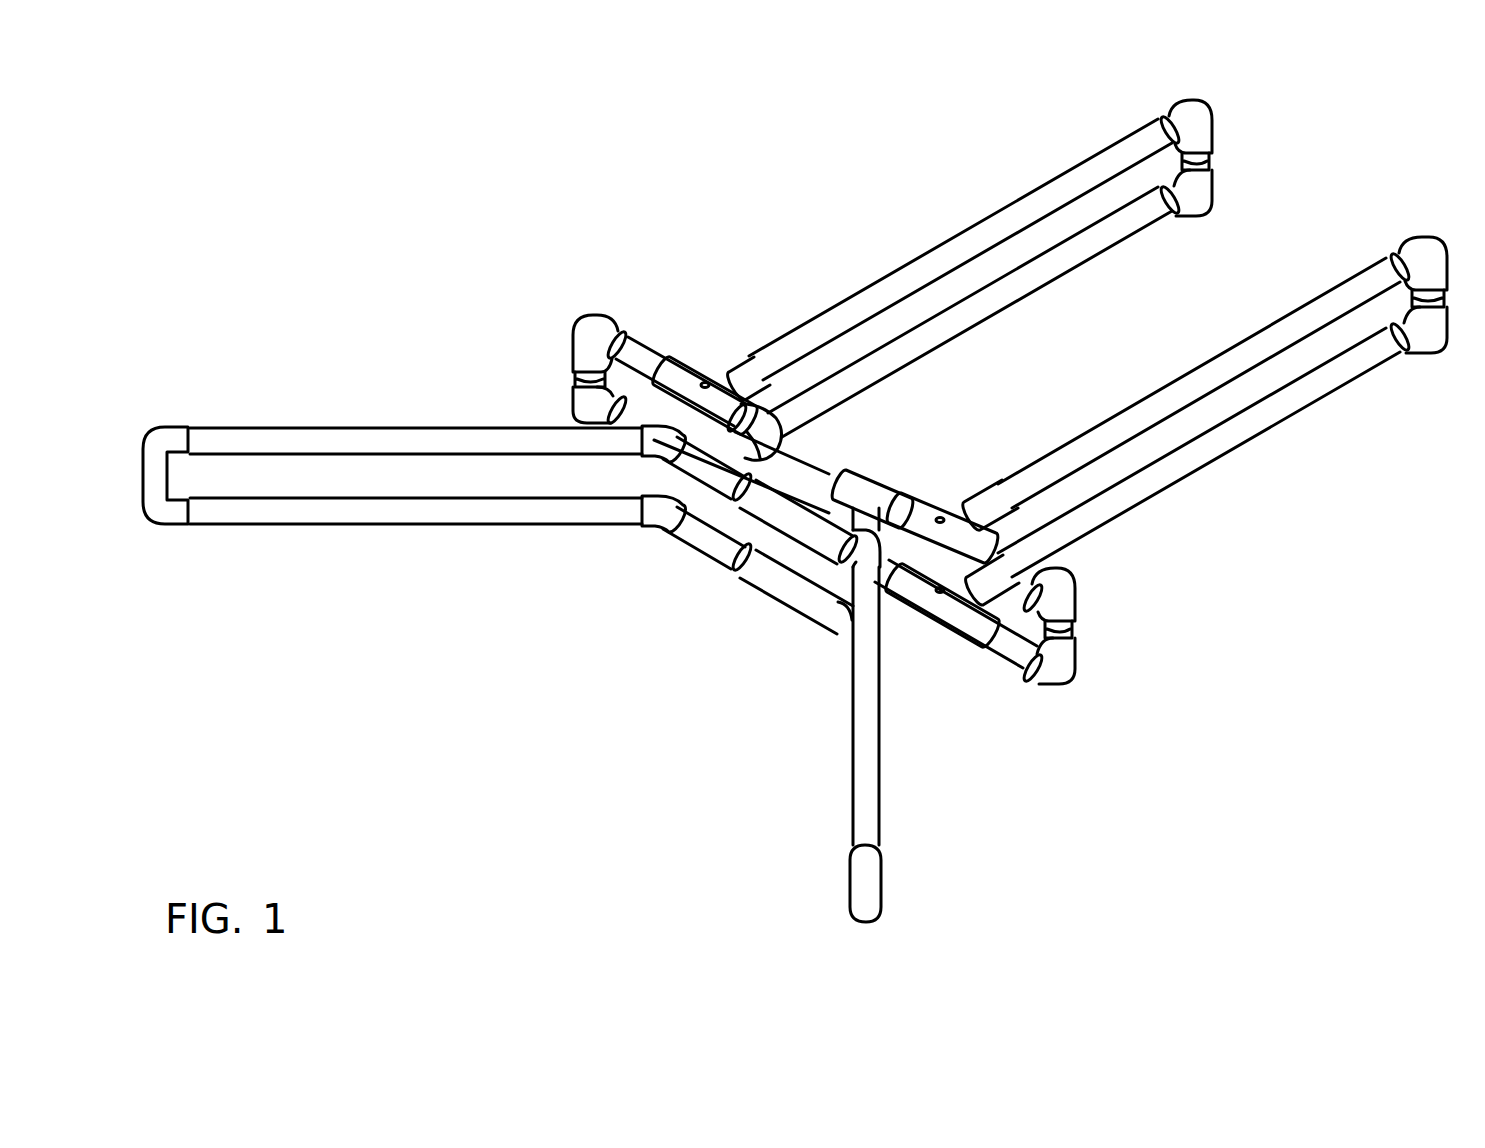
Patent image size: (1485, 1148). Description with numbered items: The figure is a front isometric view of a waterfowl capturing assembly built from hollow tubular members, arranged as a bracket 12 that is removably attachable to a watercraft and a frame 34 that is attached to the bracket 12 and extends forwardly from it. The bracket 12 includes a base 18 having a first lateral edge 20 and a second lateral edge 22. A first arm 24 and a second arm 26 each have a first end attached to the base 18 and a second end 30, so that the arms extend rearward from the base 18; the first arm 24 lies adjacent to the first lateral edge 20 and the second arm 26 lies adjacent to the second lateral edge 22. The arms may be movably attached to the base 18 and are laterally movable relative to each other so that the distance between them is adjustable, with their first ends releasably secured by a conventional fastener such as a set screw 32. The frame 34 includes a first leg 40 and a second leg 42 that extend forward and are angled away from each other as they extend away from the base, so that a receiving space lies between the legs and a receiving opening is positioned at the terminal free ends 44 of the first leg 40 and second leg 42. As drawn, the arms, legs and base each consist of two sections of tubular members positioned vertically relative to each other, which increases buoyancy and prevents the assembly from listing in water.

The bracket 12 is at (972, 394).
The base 18 is at (652, 352).
The first lateral edge 20 is at (575, 335).
The second lateral edge 22 is at (1062, 680).
The first arm 24 is at (988, 228).
The second arm 26 is at (1247, 438).
The second end 30 is at (1198, 102).
The set screw 32 is at (938, 520).
The frame 34 is at (568, 664).
The first leg 40 is at (305, 432).
The second leg 42 is at (878, 722).
The terminal free ends 44 is at (148, 470).